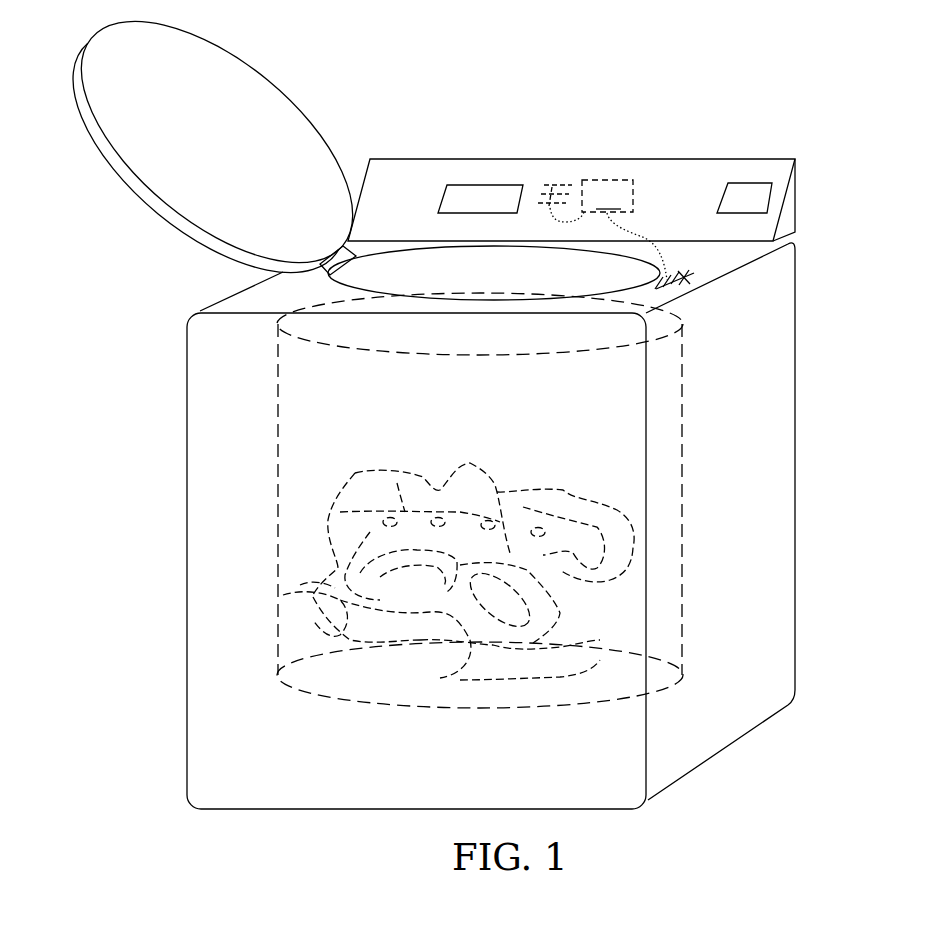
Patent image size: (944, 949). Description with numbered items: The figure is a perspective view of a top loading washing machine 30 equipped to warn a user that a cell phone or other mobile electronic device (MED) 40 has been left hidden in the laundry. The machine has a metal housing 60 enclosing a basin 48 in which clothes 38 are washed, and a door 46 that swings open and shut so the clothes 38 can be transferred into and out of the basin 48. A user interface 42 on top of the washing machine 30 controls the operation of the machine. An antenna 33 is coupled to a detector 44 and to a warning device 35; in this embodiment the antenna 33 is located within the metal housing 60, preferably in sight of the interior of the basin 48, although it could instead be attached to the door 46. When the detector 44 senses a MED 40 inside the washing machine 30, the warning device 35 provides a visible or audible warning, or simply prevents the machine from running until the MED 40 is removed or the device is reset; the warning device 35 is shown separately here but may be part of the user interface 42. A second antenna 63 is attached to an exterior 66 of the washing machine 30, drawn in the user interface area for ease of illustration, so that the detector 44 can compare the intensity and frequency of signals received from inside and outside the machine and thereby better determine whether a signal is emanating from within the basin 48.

The top loading washing machine 30 is at (707, 81).
The antenna 33 is at (697, 293).
The warning device 35 is at (720, 191).
The clothes 38 is at (305, 590).
The mobile electronic device (MED) 40 is at (492, 478).
The user interface 42 is at (440, 190).
The detector 44 is at (608, 230).
The door 46 is at (293, 99).
The basin 48 is at (686, 490).
The metal housing 60 is at (797, 352).
The second antenna 63 is at (556, 177).
The exterior 66 is at (252, 294).